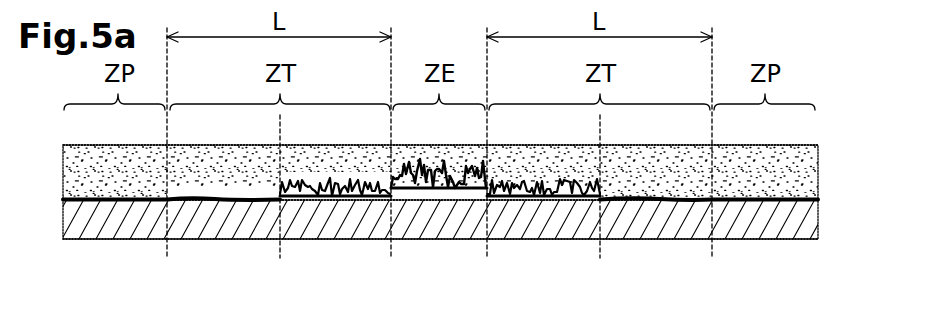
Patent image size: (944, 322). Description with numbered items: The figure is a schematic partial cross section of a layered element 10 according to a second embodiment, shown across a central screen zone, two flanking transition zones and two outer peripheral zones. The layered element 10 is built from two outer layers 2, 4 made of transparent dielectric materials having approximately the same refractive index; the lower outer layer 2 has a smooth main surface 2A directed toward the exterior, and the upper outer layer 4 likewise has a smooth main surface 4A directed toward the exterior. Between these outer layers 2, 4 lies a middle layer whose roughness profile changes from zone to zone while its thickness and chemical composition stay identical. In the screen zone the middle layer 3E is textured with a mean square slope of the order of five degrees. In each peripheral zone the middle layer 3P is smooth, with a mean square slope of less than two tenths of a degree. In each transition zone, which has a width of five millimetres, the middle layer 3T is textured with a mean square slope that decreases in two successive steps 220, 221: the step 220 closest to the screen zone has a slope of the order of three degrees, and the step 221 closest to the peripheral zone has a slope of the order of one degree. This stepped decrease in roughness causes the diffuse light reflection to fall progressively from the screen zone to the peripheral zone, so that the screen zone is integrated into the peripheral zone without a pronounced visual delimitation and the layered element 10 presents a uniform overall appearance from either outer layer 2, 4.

The layered element 10 is at (822, 82).
The outer layer 2 is at (803, 227).
The smooth main surface 2A is at (746, 245).
The outer layer 4 is at (810, 172).
The smooth main surface 4A is at (786, 135).
The middle layer of the peripheral zone 3P is at (82, 198).
The middle layer of the transition zone 3T is at (316, 193).
The middle layer of the screen zone 3E is at (426, 190).
The step 220 is at (390, 265).
The step 221 is at (280, 265).